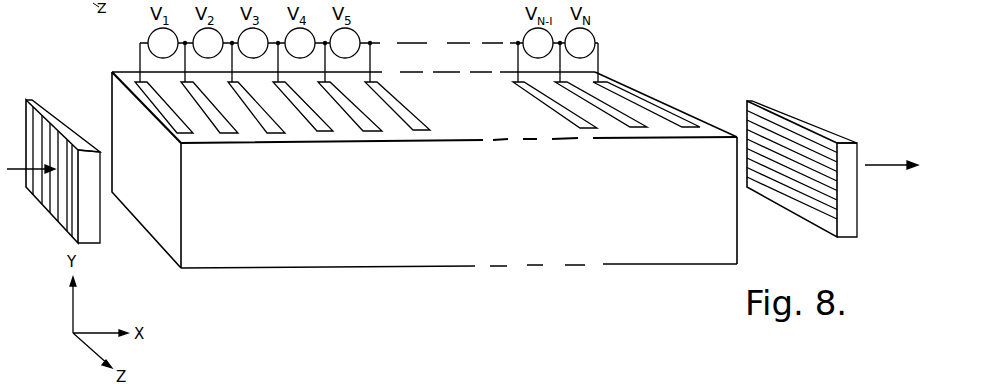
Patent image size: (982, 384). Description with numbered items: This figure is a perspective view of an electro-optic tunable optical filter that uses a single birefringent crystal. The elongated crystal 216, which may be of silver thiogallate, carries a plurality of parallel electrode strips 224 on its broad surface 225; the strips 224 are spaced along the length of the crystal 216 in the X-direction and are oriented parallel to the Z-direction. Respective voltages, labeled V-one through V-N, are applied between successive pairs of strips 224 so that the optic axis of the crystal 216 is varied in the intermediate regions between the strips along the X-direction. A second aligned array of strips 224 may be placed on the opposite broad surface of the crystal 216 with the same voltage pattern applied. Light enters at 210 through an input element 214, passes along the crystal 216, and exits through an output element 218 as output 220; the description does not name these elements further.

The incident light beam 210 is at (10, 170).
The input polarizer 214 is at (47, 107).
The elongated crystal 216 is at (330, 268).
The output polarizer (analyzer) 218 is at (782, 107).
The output light beam 220 is at (876, 165).
The electrode strips 224 is at (277, 123).
The broad surface 225 is at (443, 97).